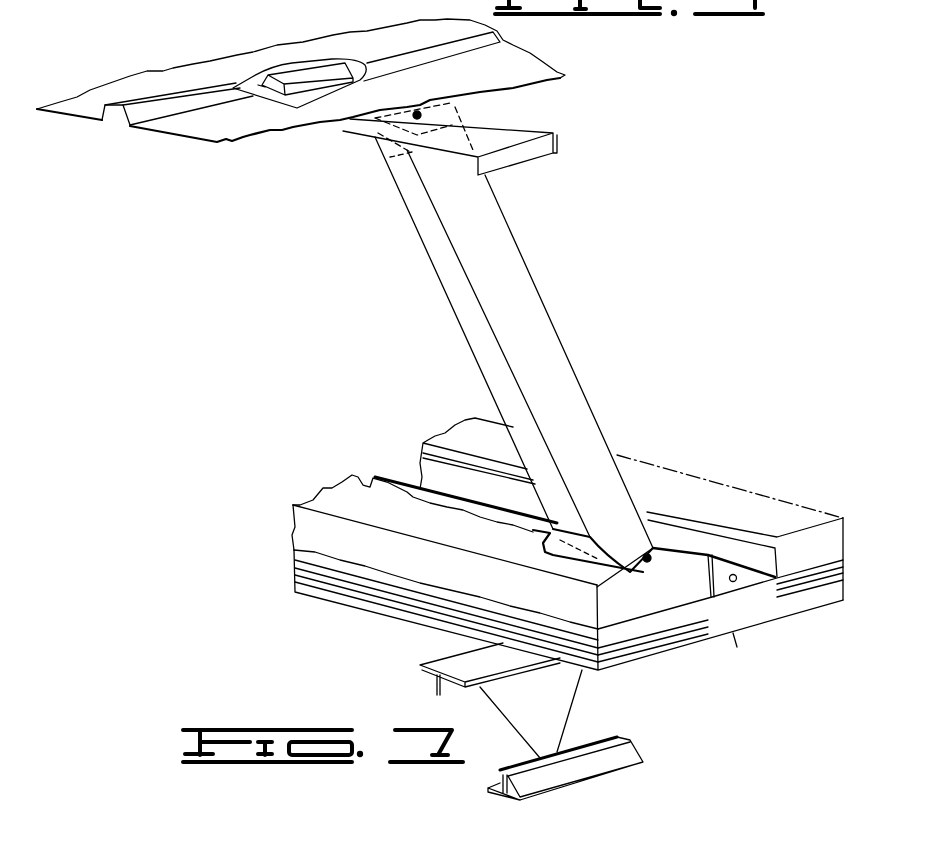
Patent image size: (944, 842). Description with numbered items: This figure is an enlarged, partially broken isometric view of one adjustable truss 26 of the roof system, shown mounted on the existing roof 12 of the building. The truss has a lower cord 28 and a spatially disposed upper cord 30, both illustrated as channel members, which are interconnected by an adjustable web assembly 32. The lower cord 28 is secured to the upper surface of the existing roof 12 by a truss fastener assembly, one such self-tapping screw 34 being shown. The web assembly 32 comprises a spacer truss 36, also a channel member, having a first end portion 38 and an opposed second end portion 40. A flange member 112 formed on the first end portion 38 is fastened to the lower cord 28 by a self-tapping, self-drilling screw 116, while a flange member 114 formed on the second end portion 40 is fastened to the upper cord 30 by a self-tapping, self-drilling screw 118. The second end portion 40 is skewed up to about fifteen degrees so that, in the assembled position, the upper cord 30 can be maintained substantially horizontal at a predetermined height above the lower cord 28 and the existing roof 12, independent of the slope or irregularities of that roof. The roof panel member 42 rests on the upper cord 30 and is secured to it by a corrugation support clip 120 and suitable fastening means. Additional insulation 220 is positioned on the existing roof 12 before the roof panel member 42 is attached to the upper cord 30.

The existing roof 12 is at (340, 577).
The adjustable truss 26 is at (560, 135).
The lower cord 28 is at (707, 540).
The upper cord 30 is at (518, 130).
The adjustable web assembly 32 is at (540, 289).
The self-tapping screw 34 is at (737, 578).
The spacer truss 36 is at (455, 315).
The first end portion 38 is at (630, 533).
The opposed second end portion 40 is at (381, 163).
The roof panel member 42 is at (404, 35).
The flange member 112 is at (668, 553).
The flange member 114 is at (450, 103).
The self-tapping, self-drilling screw 116 is at (647, 562).
The self-tapping, self-drilling screw 118 is at (417, 111).
The corrugation support clip 120 is at (295, 70).
The insulation 220 is at (310, 533).